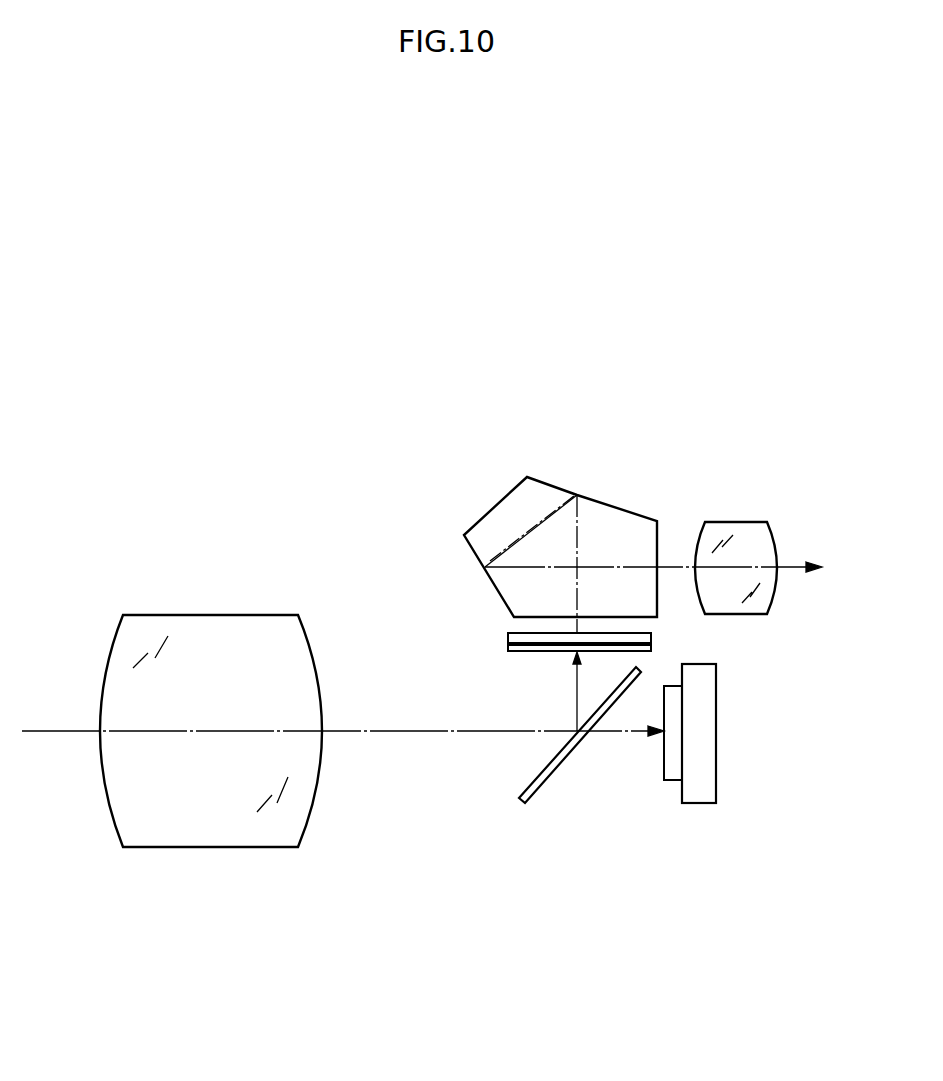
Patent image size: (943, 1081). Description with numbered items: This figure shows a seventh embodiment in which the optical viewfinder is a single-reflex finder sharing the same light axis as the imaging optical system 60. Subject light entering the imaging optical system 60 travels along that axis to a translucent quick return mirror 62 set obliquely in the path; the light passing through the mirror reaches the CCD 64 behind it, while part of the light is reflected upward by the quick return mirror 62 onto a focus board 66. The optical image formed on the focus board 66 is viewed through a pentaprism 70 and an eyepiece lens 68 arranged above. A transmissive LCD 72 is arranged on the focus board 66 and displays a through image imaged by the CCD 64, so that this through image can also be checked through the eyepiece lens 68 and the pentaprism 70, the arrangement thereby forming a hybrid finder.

The imaging optical system 60 is at (215, 614).
The quick return mirror 62 is at (536, 796).
The CCD 64 is at (700, 804).
The focus board 66 is at (509, 652).
The eyepiece lens 68 is at (752, 522).
The pentaprism 70 is at (558, 488).
The transmissive LCD 72 is at (651, 633).